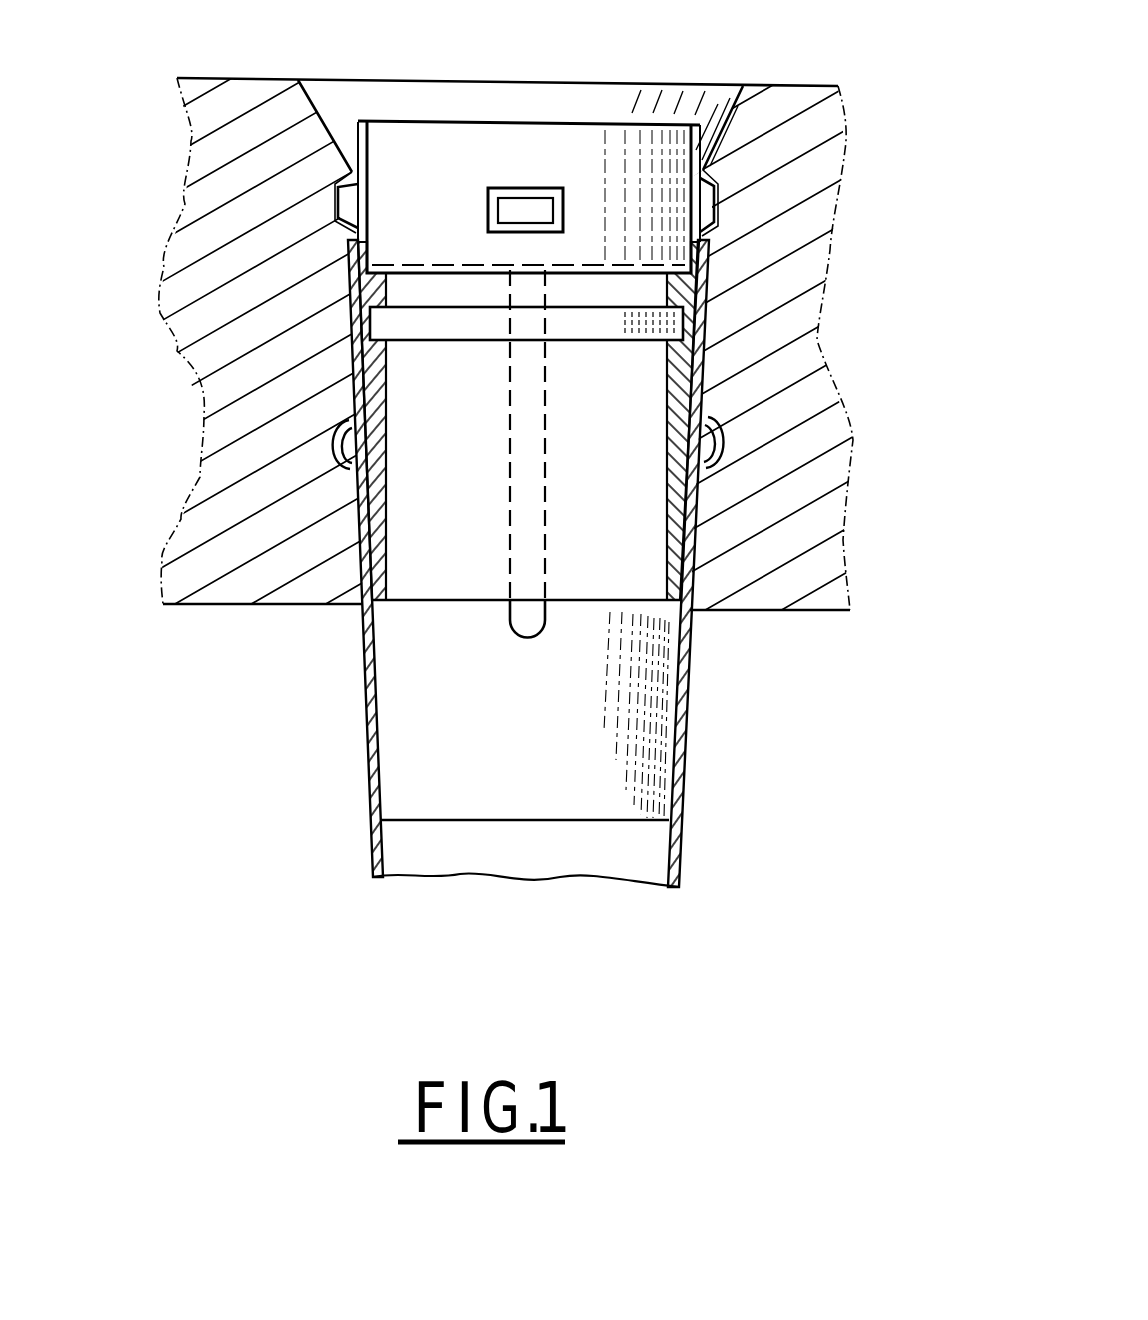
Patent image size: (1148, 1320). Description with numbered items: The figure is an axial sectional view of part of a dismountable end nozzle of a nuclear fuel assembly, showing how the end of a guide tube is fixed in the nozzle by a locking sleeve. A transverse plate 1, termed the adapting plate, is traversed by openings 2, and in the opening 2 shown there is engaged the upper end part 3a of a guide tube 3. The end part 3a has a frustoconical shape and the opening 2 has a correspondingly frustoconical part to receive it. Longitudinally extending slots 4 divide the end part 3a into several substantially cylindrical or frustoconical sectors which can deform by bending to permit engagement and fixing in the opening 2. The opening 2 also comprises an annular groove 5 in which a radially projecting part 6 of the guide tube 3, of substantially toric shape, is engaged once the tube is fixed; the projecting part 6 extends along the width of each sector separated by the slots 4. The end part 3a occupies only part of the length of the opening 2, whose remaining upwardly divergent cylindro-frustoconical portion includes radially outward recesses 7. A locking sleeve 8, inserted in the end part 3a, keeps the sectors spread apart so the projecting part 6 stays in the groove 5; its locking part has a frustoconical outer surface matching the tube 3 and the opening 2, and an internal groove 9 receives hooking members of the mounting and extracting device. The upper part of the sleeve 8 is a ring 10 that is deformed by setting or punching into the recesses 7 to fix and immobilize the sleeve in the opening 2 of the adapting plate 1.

The transverse plate 1 is at (774, 333).
The opening 2 is at (683, 107).
The guide tube 3 is at (678, 843).
The upper end part 3a is at (678, 665).
The slots 4 is at (523, 623).
The annular groove 5 is at (712, 462).
The radially projecting part 6 is at (717, 417).
The recesses 7 is at (343, 205).
The locking sleeve 8 is at (378, 400).
The groove 9 is at (370, 316).
The ring 10 is at (365, 118).